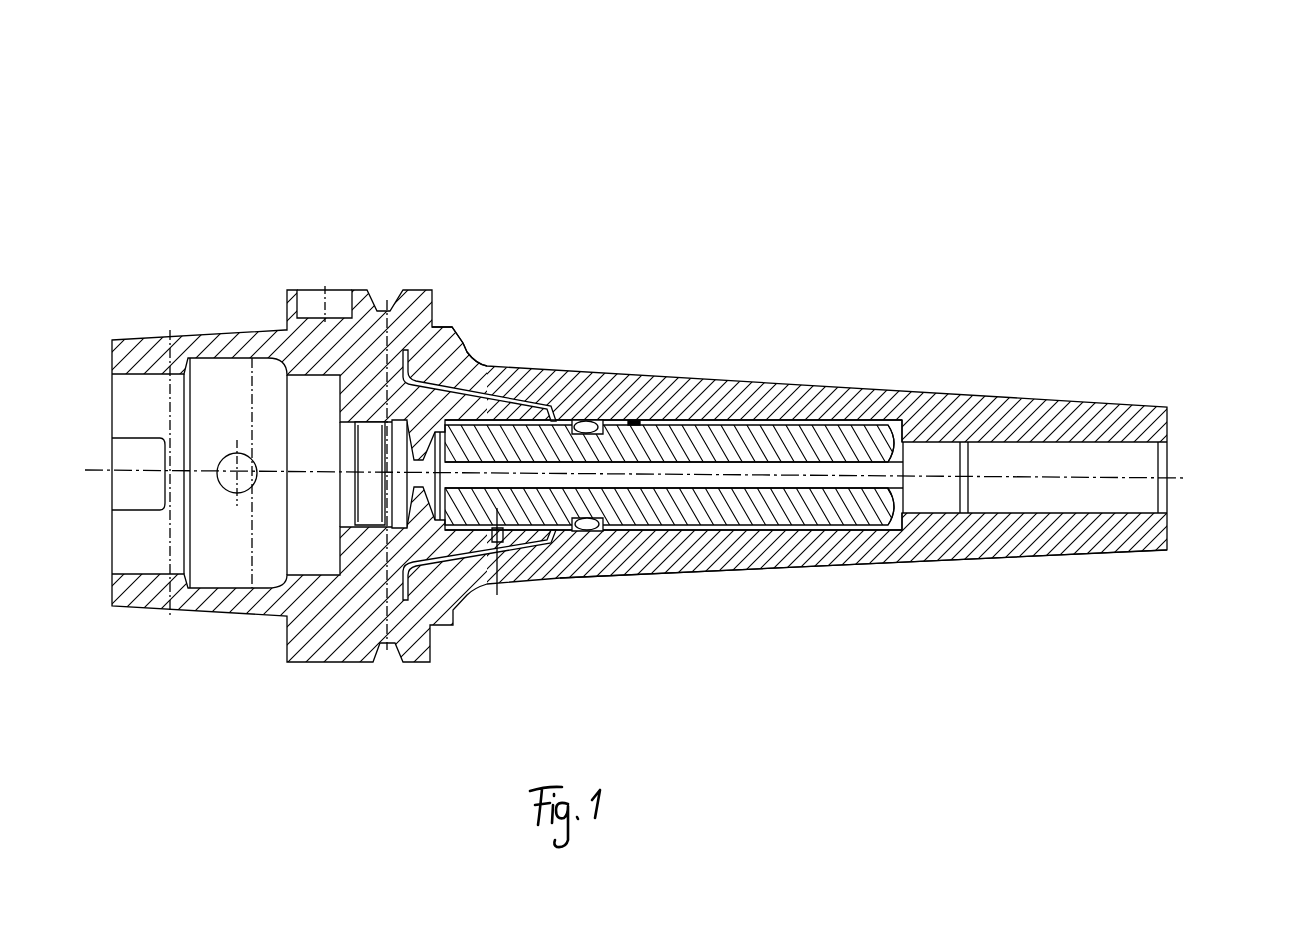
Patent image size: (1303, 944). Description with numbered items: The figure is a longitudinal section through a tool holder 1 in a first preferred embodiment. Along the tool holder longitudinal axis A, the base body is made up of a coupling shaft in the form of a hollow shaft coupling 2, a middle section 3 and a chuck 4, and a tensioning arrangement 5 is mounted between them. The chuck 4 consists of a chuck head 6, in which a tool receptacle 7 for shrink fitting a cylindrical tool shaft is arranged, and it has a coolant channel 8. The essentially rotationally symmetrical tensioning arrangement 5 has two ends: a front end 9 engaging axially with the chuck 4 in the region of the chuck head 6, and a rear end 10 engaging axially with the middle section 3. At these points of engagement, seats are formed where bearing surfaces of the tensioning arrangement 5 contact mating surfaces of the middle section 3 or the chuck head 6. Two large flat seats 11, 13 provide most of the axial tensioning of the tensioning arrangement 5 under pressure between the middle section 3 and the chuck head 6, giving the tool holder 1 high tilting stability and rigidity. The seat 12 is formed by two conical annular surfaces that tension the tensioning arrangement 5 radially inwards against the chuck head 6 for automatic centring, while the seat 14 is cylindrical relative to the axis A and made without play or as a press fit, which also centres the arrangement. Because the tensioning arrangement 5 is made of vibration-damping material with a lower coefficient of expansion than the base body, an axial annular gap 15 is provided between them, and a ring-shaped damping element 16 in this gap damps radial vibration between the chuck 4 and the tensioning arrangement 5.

The tool holder 1 is at (651, 367).
The hollow shaft coupling 2 is at (218, 345).
The middle section 3 is at (362, 303).
The chuck 4 is at (770, 505).
The tensioning arrangement 5 is at (693, 402).
The chuck head 6 is at (1040, 535).
The tool receptacle 7 is at (1105, 465).
The coolant channel 8 is at (743, 470).
The front end 9 is at (873, 418).
The rear end 10 is at (462, 343).
The flat seat 11 is at (893, 403).
The conical seat 12 is at (897, 400).
The flat seat 13 is at (443, 330).
The cylindrical seat 14 is at (423, 345).
The axial annular gap 15 is at (648, 423).
The ring-shaped damping element 16 is at (590, 525).
The tool holder longitudinal axis A is at (1177, 480).